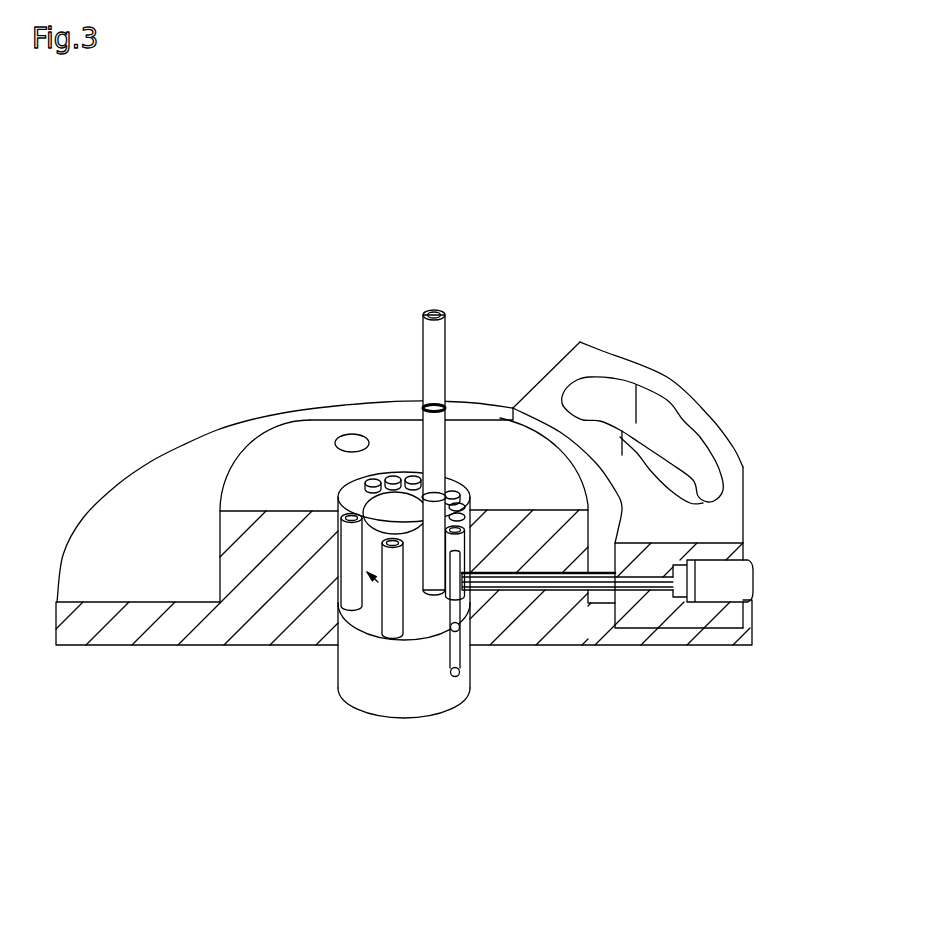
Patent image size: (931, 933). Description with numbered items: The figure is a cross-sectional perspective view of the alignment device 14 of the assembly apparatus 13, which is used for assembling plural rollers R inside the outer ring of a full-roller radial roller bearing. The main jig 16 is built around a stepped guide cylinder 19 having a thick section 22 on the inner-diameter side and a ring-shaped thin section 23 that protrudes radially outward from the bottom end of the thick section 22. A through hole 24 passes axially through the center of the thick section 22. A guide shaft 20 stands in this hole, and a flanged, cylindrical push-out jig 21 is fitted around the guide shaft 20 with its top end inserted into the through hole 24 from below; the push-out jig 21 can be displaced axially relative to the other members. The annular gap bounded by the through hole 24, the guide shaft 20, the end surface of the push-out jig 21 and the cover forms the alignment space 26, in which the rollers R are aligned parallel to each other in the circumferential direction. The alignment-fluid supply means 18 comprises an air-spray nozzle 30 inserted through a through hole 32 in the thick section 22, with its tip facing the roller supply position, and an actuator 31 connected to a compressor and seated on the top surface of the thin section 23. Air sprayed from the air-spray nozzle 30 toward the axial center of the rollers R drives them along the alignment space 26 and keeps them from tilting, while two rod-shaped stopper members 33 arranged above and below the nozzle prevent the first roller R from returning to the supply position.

The assembly apparatus 13 is at (630, 340).
The alignment device 14 is at (653, 347).
The main jig 16 is at (240, 460).
The alignment-fluid supply means 18 is at (713, 522).
The guide cylinder 19 is at (273, 467).
The guide shaft 20 is at (337, 617).
The push-out jig 21 is at (367, 683).
The thick section 22 is at (297, 440).
The thin section 23 is at (95, 553).
The through hole 24 is at (356, 485).
The alignment space 26 is at (420, 603).
The air-spray nozzle 30 is at (593, 590).
The actuator 31 is at (697, 420).
The through hole 32 is at (543, 583).
The stopper member 33 is at (456, 598).
The roller R is at (435, 353).